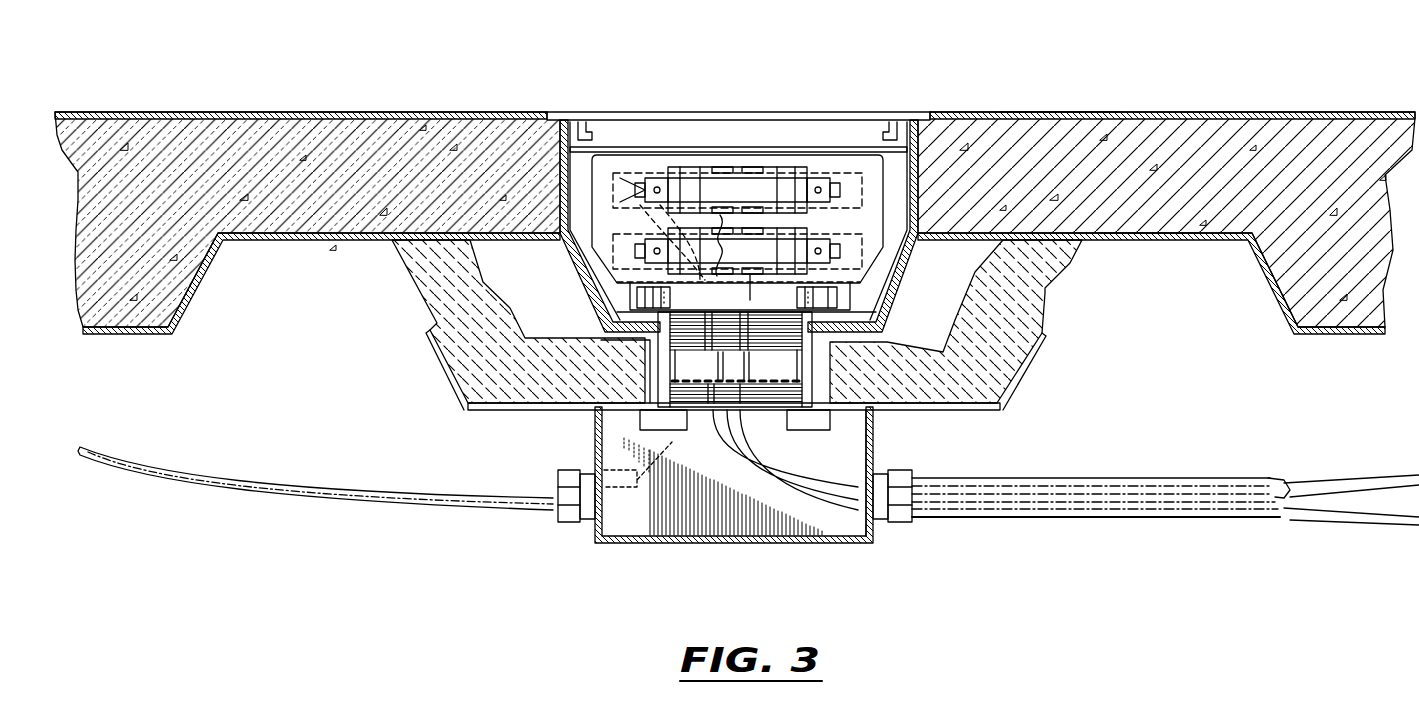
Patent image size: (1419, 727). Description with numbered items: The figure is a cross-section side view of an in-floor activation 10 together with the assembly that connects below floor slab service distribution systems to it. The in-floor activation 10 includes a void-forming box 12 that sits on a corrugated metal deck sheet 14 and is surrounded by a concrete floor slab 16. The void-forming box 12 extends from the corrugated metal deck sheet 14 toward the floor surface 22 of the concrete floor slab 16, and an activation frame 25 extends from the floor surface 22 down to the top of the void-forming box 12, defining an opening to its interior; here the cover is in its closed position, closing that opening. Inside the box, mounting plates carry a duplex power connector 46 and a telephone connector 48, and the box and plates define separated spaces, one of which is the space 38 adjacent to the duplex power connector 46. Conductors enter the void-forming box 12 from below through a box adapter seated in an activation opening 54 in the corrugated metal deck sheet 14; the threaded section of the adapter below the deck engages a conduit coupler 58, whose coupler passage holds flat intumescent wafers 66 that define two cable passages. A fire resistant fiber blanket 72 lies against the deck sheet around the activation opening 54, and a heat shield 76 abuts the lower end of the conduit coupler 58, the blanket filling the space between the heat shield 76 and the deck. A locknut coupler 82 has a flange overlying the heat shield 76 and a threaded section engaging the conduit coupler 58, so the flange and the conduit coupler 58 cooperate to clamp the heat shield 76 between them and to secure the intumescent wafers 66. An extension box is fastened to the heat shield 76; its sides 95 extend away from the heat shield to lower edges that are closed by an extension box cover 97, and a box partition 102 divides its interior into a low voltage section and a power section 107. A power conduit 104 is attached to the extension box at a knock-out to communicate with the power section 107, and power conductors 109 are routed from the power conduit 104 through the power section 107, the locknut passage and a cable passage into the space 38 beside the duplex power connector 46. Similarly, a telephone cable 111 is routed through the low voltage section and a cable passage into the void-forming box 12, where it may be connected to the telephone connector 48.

The in-floor activation 10 is at (891, 99).
The void-forming box 12 is at (545, 162).
The corrugated metal deck sheet 14 is at (1140, 240).
The concrete floor slab 16 is at (1133, 158).
The floor surface 22 is at (1016, 118).
The activation frame 25 is at (565, 112).
The separated space 38 is at (822, 185).
The duplex power connector 46 is at (690, 190).
The telephone connector 48 is at (633, 205).
The activation opening 54 is at (683, 358).
The conduit coupler 58 is at (807, 373).
The intumescent wafers 66 is at (688, 373).
The fire resistant fiber blanket 72 is at (1027, 308).
The heat shield 76 is at (1022, 372).
The locknut coupler 82 is at (810, 412).
The sides 95 is at (590, 522).
The extension box cover 97 is at (735, 545).
The box partition 102 is at (810, 510).
The power conduit 104 is at (1028, 498).
The power section 107 is at (694, 521).
The power conductors 109 is at (1345, 488).
The telephone cable 111 is at (247, 482).